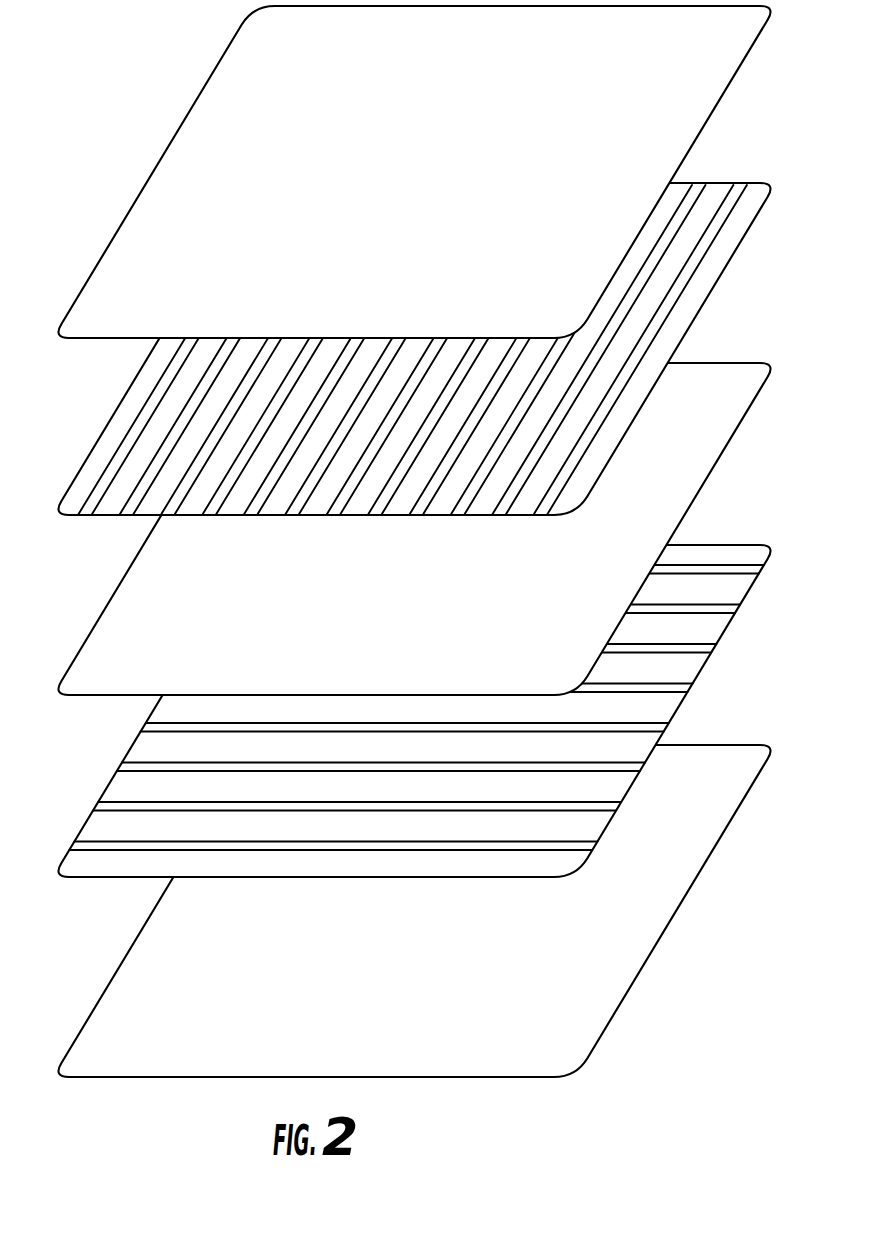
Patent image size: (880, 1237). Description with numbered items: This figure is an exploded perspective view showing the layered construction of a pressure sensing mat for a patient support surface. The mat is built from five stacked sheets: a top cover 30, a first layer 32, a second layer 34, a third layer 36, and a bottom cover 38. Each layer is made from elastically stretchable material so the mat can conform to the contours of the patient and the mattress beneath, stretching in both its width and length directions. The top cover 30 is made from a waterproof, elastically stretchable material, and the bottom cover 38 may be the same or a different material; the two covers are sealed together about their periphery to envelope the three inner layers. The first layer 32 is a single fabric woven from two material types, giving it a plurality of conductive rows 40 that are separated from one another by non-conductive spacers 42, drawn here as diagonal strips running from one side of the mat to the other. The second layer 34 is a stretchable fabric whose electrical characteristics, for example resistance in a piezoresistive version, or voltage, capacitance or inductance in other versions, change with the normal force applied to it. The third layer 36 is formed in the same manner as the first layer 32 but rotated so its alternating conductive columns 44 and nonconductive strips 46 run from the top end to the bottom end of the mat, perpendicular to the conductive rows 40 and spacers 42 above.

The top cover 30 is at (126, 237).
The first layer 32 is at (96, 455).
The second layer 34 is at (100, 645).
The third layer 36 is at (105, 832).
The bottom cover 38 is at (94, 1047).
The conductive rows 40 is at (228, 510).
The non-conductive spacers 42 is at (290, 510).
The conductive columns 44 is at (218, 860).
The nonconductive strips 46 is at (385, 843).